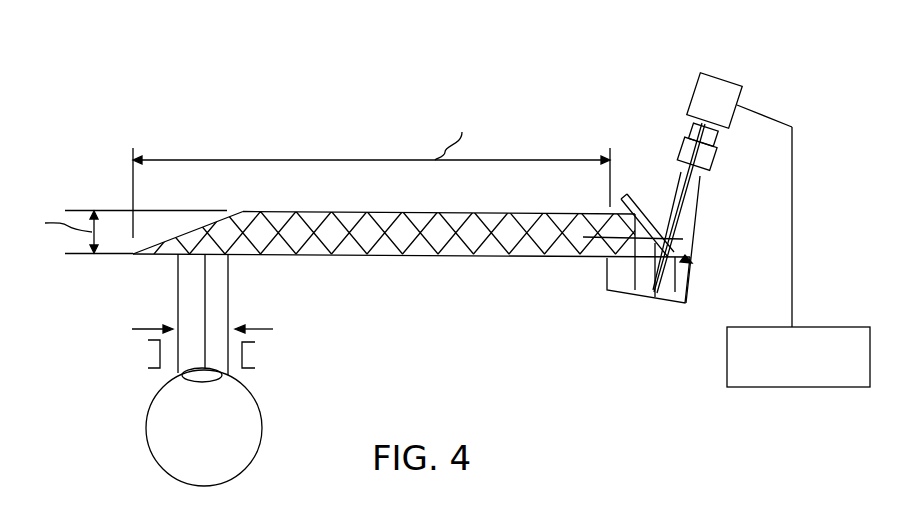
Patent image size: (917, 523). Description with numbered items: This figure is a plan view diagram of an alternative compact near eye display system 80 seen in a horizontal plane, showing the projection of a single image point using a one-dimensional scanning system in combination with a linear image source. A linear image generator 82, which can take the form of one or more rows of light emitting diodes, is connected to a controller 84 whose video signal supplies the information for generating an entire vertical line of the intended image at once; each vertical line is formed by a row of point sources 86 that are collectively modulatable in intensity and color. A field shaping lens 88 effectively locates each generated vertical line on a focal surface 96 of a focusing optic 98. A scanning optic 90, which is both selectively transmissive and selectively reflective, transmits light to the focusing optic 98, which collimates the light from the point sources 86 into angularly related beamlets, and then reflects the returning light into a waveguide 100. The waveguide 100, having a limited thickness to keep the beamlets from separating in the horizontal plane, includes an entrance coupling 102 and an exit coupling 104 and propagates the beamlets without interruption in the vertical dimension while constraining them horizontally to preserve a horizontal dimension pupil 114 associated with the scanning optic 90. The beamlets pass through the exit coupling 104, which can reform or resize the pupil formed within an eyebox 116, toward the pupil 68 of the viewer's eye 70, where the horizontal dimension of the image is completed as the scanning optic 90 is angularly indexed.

The pupil 68 is at (215, 383).
The viewer's eye 70 is at (233, 442).
The near eye display system 80 is at (351, 120).
The linear image generator 82 is at (712, 92).
The controller 84 is at (811, 370).
The point sources 86 is at (705, 122).
The field shaping lens 88 is at (708, 153).
The scanning optic 90 is at (643, 207).
The focal surface 96 is at (642, 200).
The focusing optic 98 is at (617, 272).
The waveguide 100 is at (346, 208).
The entrance coupling 102 is at (601, 213).
The exit coupling 104 is at (200, 221).
The horizontal dimension pupil 114 is at (258, 326).
The eyebox 116 is at (172, 367).